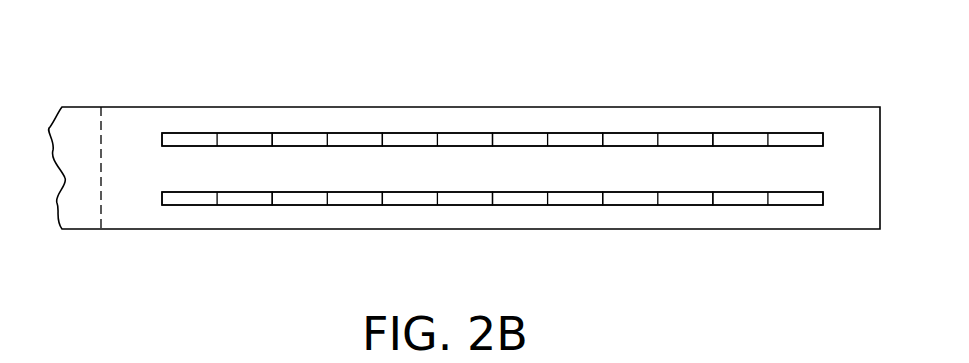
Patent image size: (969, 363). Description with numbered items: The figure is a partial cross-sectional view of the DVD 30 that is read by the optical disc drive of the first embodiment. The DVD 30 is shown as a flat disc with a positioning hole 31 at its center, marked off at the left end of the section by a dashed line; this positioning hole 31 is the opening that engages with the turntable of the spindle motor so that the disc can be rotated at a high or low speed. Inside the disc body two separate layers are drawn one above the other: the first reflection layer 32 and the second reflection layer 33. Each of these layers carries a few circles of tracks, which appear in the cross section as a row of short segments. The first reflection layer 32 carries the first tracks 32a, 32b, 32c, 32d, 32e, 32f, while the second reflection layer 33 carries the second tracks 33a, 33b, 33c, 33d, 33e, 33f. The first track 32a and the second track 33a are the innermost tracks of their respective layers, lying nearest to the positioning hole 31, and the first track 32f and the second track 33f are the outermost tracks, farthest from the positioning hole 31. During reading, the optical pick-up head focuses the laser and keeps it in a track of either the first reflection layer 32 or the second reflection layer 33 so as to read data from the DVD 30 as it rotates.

The DVD 30 is at (888, 42).
The positioning hole 31 is at (76, 137).
The first reflection layer 32 is at (823, 197).
The first track 32a is at (190, 203).
The first track 32b is at (302, 203).
The first track 32c is at (411, 203).
The first track 32d is at (520, 203).
The first track 32e is at (631, 203).
The first track 32f is at (742, 203).
The second reflection layer 33 is at (823, 137).
The second track 33a is at (190, 141).
The second track 33b is at (302, 141).
The second track 33c is at (411, 141).
The second track 33d is at (520, 141).
The second track 33e is at (630, 141).
The second track 33f is at (742, 141).